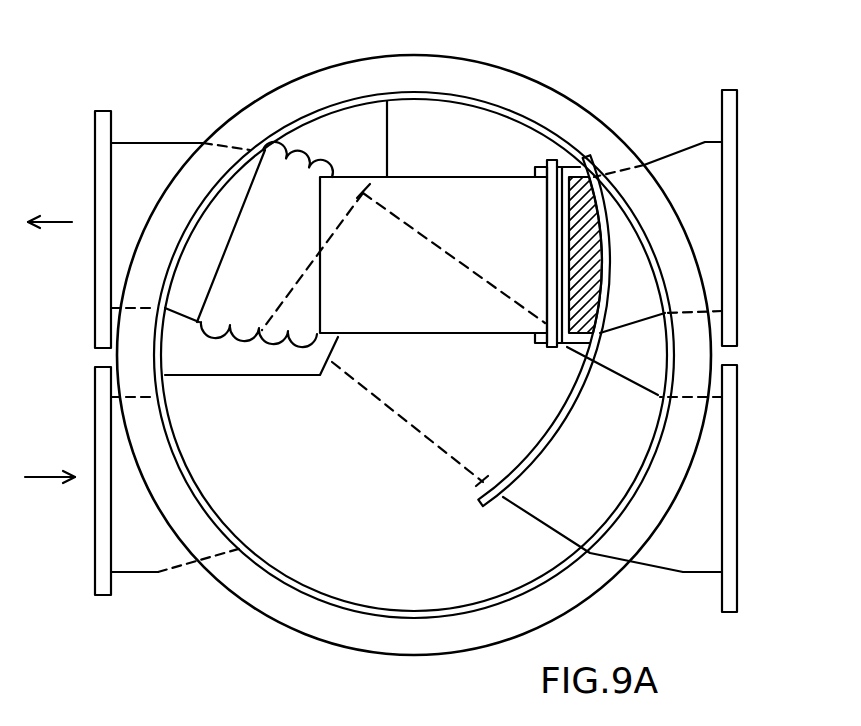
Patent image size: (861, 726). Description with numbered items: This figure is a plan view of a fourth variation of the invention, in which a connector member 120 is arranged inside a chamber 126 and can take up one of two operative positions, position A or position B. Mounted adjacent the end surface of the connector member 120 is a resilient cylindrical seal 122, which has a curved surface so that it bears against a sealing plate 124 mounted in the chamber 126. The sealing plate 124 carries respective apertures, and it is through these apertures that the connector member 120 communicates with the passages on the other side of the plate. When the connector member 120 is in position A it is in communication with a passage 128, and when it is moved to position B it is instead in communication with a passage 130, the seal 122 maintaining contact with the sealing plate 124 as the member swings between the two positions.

The connector member 120 is at (458, 188).
The resilient cylindrical seal 122 is at (585, 205).
The sealing plate 124 is at (557, 427).
The chamber 126 is at (556, 573).
The passage 128 is at (766, 218).
The passage 130 is at (765, 488).